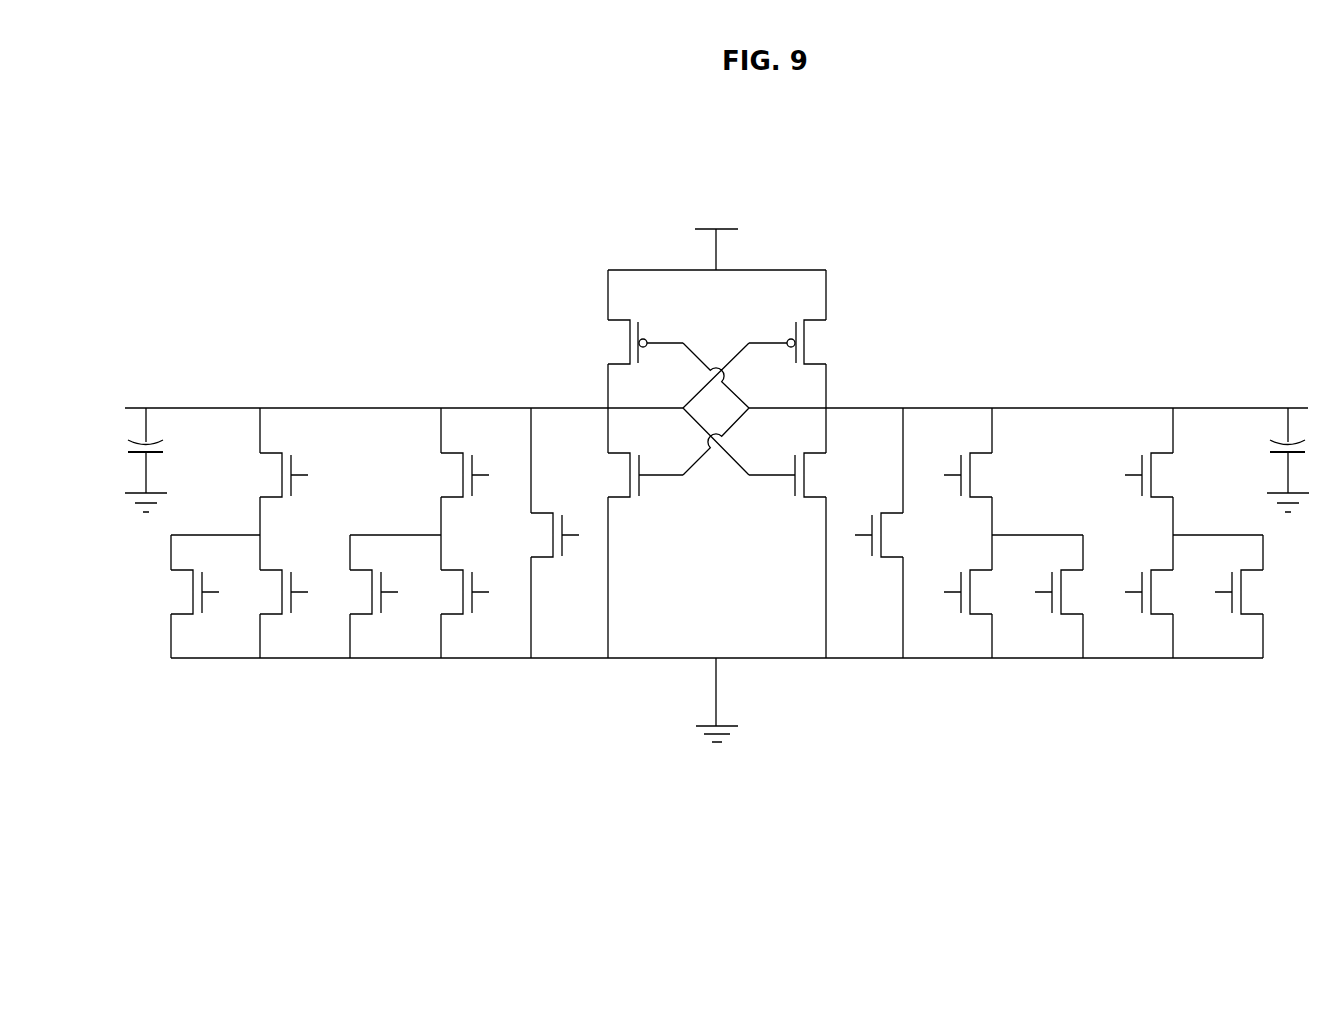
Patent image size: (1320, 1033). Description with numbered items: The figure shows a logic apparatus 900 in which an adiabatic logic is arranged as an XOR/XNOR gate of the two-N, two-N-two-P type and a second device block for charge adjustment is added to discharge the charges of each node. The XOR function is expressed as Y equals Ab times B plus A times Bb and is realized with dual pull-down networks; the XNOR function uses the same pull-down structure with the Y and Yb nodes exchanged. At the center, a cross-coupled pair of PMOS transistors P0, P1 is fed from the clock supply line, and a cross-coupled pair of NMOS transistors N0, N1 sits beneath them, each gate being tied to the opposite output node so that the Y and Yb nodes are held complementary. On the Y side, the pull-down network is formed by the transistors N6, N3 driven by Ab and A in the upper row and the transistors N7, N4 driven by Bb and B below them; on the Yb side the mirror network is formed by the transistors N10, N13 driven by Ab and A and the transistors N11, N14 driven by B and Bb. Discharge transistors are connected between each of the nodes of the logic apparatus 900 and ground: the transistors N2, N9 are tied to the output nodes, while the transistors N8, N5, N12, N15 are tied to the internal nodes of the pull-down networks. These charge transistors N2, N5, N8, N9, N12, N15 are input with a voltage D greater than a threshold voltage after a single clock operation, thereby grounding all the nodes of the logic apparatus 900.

The logic apparatus 900 is at (280, 211).
The PMOS transistor P0 is at (641, 317).
The PMOS transistor P1 is at (793, 317).
The NMOS transistor N0 is at (640, 511).
The NMOS transistor N1 is at (794, 511).
The discharge transistor N2 is at (548, 533).
The NMOS transistor N3 is at (458, 489).
The NMOS transistor N4 is at (458, 614).
The discharge transistor N5 is at (390, 596).
The NMOS transistor N6 is at (278, 489).
The NMOS transistor N7 is at (278, 614).
The discharge transistor N8 is at (208, 596).
The discharge transistor N9 is at (885, 533).
The NMOS transistor N10 is at (980, 489).
The NMOS transistor N11 is at (980, 614).
The discharge transistor N12 is at (1049, 596).
The NMOS transistor N13 is at (1162, 489).
The NMOS transistor N14 is at (1162, 614).
The discharge transistor N15 is at (1230, 596).